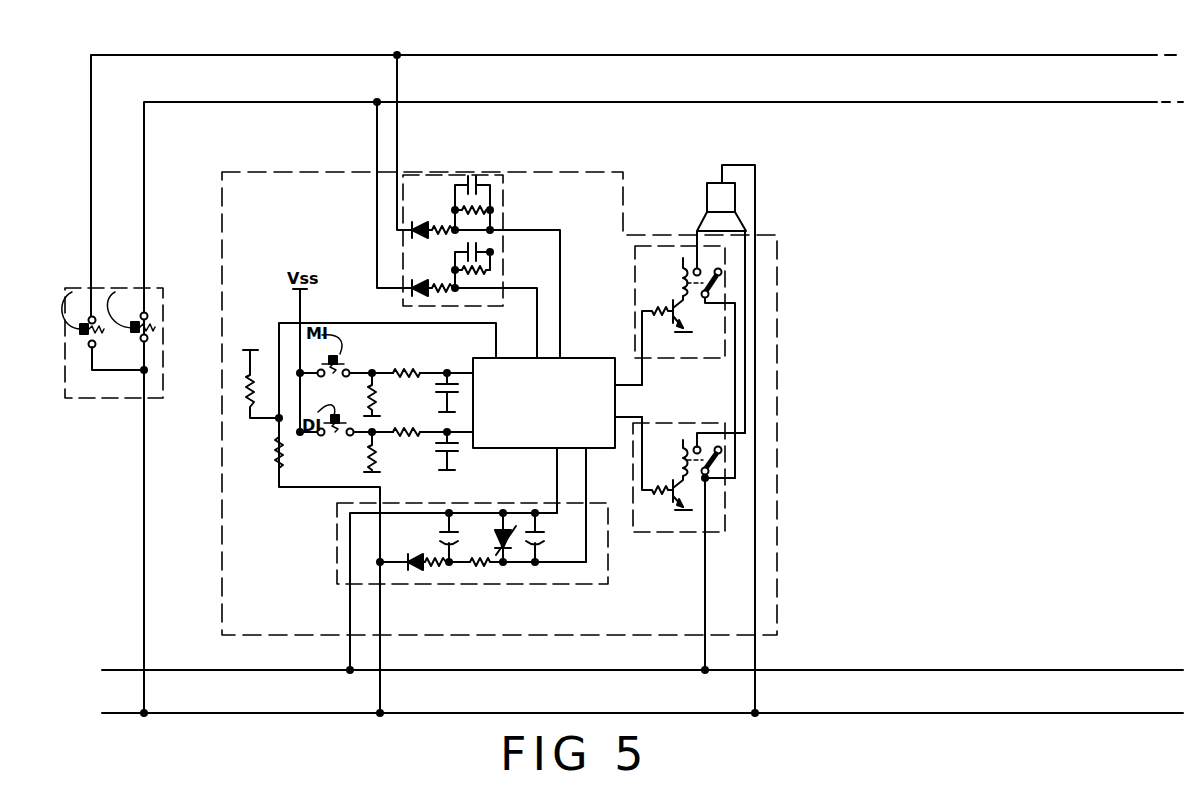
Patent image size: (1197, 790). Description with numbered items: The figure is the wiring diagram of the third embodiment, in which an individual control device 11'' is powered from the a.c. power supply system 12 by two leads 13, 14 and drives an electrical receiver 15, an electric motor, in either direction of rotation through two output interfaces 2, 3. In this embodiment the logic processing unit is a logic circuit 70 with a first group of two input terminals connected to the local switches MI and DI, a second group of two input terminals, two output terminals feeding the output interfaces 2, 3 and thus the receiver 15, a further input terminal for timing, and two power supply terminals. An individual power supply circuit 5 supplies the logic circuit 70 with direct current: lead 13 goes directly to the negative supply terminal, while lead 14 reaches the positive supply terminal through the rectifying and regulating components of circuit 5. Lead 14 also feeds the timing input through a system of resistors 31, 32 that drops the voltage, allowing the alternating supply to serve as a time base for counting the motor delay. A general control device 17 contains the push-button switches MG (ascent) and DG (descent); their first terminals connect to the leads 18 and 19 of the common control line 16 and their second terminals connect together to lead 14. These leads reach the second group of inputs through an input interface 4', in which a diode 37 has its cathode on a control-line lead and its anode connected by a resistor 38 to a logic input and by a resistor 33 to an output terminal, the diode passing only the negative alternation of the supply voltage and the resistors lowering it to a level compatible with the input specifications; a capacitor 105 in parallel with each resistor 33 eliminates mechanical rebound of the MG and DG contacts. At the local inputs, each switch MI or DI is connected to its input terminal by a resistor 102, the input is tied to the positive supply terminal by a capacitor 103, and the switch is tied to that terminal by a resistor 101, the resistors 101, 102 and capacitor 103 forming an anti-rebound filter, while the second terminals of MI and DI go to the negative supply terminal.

The output interface 2 is at (690, 358).
The output interface 3 is at (668, 532).
The input interface 4' is at (471, 240).
The individual power supply circuit 5 is at (585, 584).
The individual control device 11'' is at (499, 390).
The a.c. power supply system 12 is at (96, 668).
The lead 13 is at (205, 660).
The lead 14 is at (200, 716).
The electrical receiver 15 is at (707, 182).
The common control line 16 is at (236, 132).
The general control device 17 is at (85, 399).
The lead 18 is at (266, 102).
The lead 19 is at (151, 55).
The resistor 31 is at (276, 452).
The resistor 32 is at (240, 392).
The resistor 33 is at (480, 272).
The diode 37 is at (412, 288).
The resistor 38 is at (420, 278).
The logic circuit 70 is at (507, 449).
The resistor 101 is at (370, 380).
The resistor 102 is at (413, 372).
The capacitor 103 is at (455, 372).
The capacitor 105 is at (470, 177).